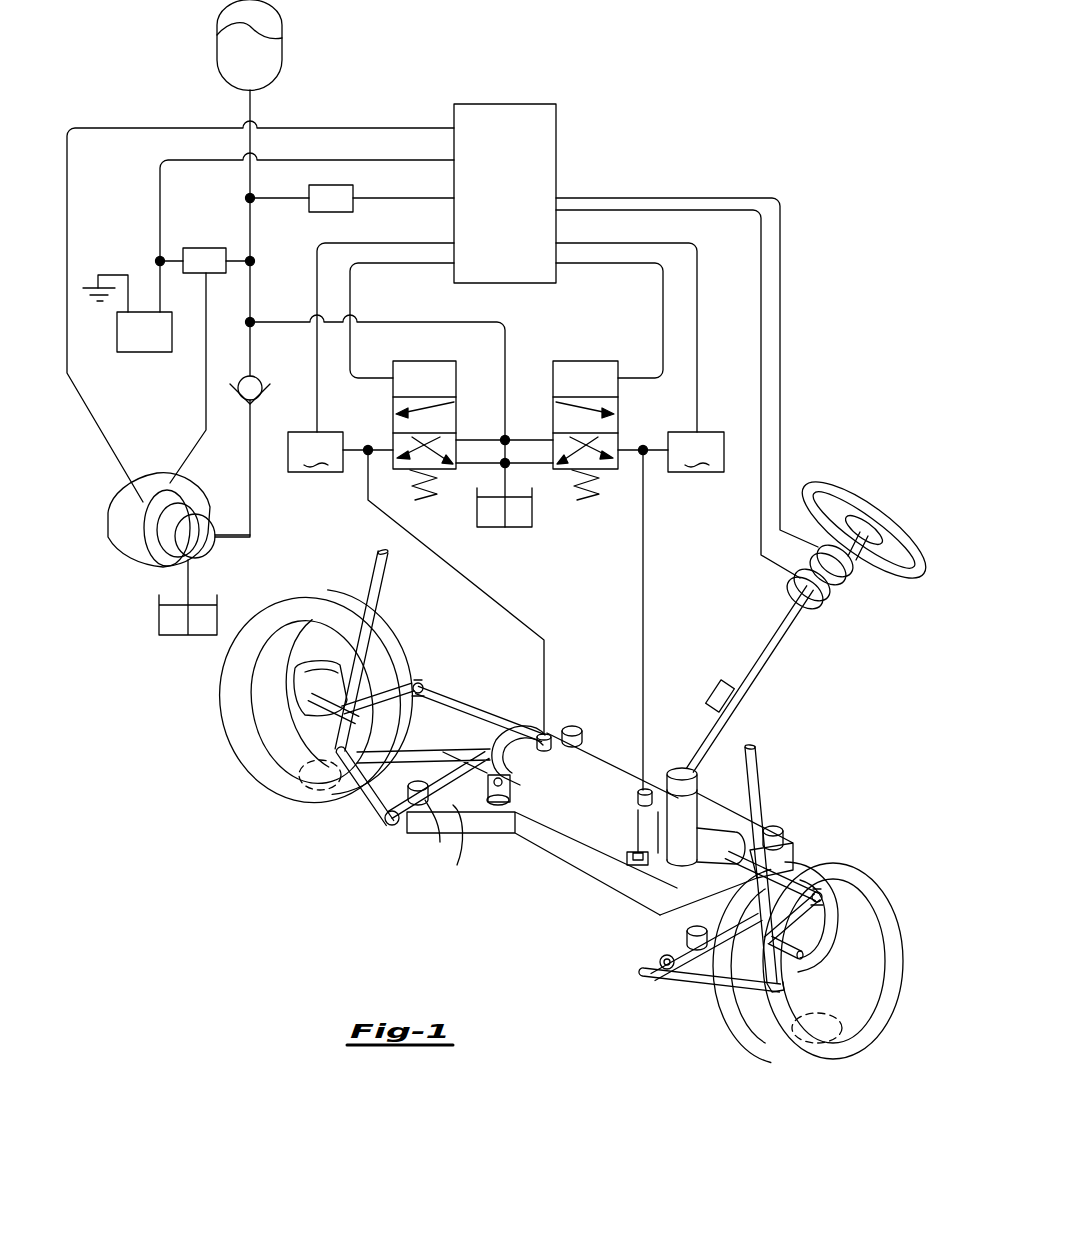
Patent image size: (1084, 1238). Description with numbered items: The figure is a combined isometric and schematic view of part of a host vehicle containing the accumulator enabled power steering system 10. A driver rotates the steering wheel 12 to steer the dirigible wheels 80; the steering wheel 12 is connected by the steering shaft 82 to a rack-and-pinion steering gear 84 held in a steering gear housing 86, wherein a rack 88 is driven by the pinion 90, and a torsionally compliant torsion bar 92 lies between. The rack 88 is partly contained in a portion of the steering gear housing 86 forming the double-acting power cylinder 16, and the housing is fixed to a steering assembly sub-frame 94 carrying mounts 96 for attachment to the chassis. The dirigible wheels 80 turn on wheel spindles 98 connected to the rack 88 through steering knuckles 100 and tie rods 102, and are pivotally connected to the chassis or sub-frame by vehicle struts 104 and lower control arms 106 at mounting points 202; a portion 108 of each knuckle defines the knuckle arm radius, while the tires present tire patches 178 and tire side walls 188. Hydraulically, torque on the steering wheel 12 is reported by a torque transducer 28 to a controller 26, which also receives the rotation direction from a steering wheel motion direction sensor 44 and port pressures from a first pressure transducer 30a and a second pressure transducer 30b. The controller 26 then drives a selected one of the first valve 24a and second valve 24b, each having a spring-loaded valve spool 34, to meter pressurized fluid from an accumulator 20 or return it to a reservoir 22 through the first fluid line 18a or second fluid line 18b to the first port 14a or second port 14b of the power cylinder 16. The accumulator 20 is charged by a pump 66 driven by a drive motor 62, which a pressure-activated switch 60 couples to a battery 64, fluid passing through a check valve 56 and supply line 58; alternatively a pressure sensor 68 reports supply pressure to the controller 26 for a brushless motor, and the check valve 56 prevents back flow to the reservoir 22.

The accumulator enabled power steering system 10 is at (825, 232).
The steering wheel 12 is at (874, 516).
The first port 14a is at (541, 733).
The second port 14b is at (643, 788).
The double-acting power cylinder 16 is at (567, 770).
The first fluid line 18a is at (535, 622).
The second fluid line 18b is at (645, 573).
The accumulator 20 is at (277, 48).
The reservoir 22 is at (516, 528).
The first valve 24a is at (430, 360).
The second valve 24b is at (595, 360).
The controller 26 is at (494, 192).
The torque transducer 28 is at (850, 582).
The first pressure transducer 30a is at (340, 452).
The second pressure transducer 30b is at (671, 452).
The spring-loaded valve spool 34 is at (432, 482).
The steering wheel motion direction sensor 44 is at (830, 600).
The check valve 56 is at (240, 402).
The supply line 58 is at (252, 290).
The pressure-activated switch 60 is at (208, 247).
The drive motor 62 is at (118, 510).
The battery 64 is at (148, 353).
The pump 66 is at (208, 543).
The pressure sensor 68 is at (355, 193).
The dirigible wheels 80 is at (230, 722).
The steering shaft 82 is at (770, 632).
The steering gear 84 is at (612, 851).
The steering gear housing 86 is at (636, 840).
The rack 88 is at (715, 862).
The pinion 90 is at (706, 830).
The torsion bar 92 is at (683, 802).
The steering assembly sub-frame 94 is at (462, 805).
The mounts 96 is at (568, 726).
The wheel spindles 98 is at (313, 687).
The steering knuckles 100 is at (358, 713).
The tie rods 102 is at (450, 700).
The vehicle struts 104 is at (376, 568).
The lower control arms 106 is at (355, 812).
The portion of steering knuckle 108 is at (418, 682).
The tire patches 178 is at (300, 790).
The tire side walls 188 is at (262, 765).
The mounting points 202 is at (392, 827).